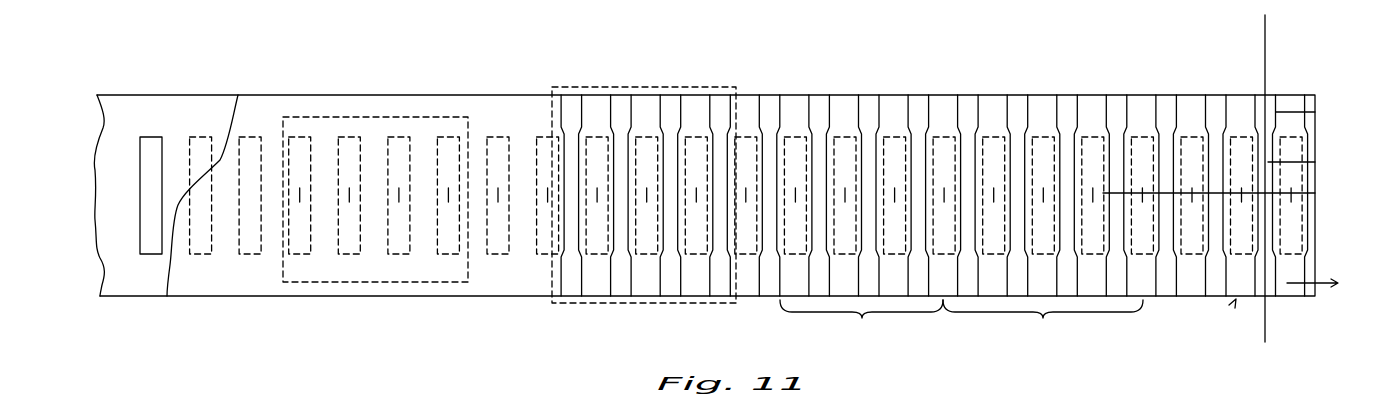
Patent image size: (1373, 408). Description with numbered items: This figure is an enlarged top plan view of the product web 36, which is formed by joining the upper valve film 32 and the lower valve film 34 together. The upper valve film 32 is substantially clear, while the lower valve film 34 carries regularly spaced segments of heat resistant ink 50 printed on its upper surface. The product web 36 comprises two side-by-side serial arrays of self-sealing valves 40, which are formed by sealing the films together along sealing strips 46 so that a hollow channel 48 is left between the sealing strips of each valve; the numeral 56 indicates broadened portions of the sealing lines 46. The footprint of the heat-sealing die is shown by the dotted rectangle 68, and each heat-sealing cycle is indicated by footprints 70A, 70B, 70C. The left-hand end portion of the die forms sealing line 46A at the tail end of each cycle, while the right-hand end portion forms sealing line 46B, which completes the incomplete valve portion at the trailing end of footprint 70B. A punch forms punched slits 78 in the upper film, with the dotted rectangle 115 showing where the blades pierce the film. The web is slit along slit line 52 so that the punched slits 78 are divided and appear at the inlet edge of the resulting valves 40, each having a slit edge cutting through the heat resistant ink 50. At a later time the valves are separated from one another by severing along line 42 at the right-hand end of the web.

The upper valve film 32 is at (215, 282).
The lower valve film 34 is at (131, 110).
The product web 36 is at (1236, 300).
The self-sealing valves 40 is at (1288, 103).
The severing line 42 is at (1265, 320).
The sealing strips 46 is at (1315, 112).
The sealing line formed by left-hand end portion 46A is at (545, 112).
The sealing line formed by right-hand end portion 46B is at (728, 140).
The hollow channel 48 is at (1295, 264).
The heat resistant ink segments 50 is at (198, 138).
The slit line 52 is at (1152, 157).
The broadened portions of sealing lines 56 is at (1315, 162).
The heat-sealing die footprint 68 is at (644, 164).
The heat-sealing cycle footprint 70A is at (625, 87).
The heat-sealing cycle footprint 70B is at (861, 220).
The heat-sealing cycle footprint 70C is at (1043, 220).
The punched slits 78 is at (399, 193).
The punch footprint 115 is at (362, 116).